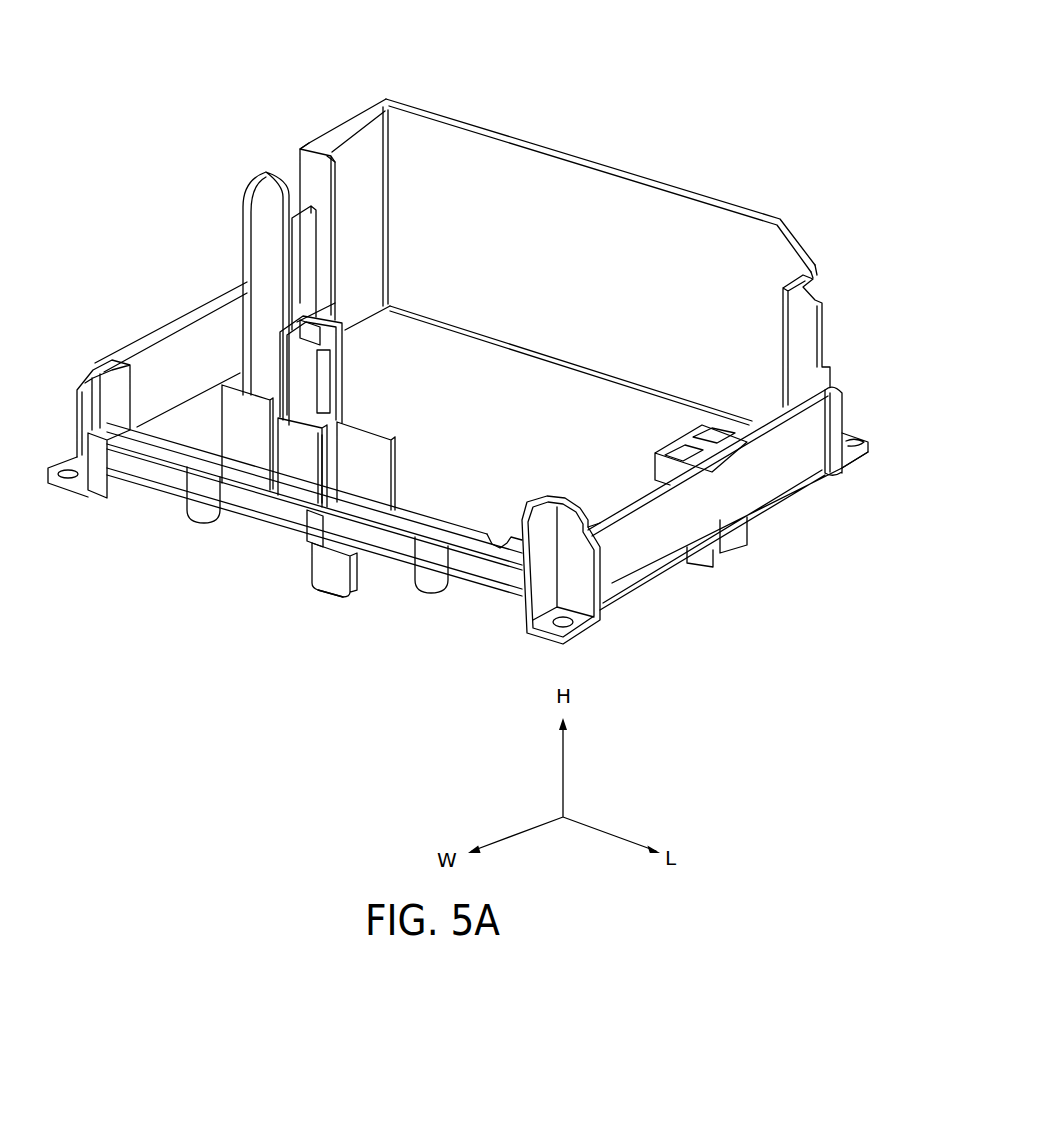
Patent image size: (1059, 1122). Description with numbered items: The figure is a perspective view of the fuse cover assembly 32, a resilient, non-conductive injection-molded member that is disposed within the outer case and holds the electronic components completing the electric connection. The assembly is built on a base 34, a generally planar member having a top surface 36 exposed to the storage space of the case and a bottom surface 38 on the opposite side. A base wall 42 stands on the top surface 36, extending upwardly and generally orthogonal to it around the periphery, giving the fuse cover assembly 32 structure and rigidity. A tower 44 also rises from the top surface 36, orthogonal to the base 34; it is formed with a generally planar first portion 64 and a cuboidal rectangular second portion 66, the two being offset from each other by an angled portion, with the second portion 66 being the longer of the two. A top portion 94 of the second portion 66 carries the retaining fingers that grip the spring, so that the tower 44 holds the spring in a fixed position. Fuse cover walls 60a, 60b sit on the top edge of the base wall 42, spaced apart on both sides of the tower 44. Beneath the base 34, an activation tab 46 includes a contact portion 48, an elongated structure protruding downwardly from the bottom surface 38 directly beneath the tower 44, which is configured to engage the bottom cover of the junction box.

The fuse cover assembly 32 is at (695, 55).
The base 34 is at (600, 490).
The top surface 36 is at (660, 422).
The bottom surface 38 is at (677, 578).
The base wall 42 is at (780, 260).
The tower 44 is at (352, 358).
The activation tab 46 is at (321, 575).
The contact portion 48 is at (333, 598).
The fuse cover wall 60a is at (238, 438).
The fuse cover wall 60b is at (369, 480).
The first portion 64 is at (316, 535).
The second portion 66 is at (295, 466).
The top portion 94 is at (345, 388).